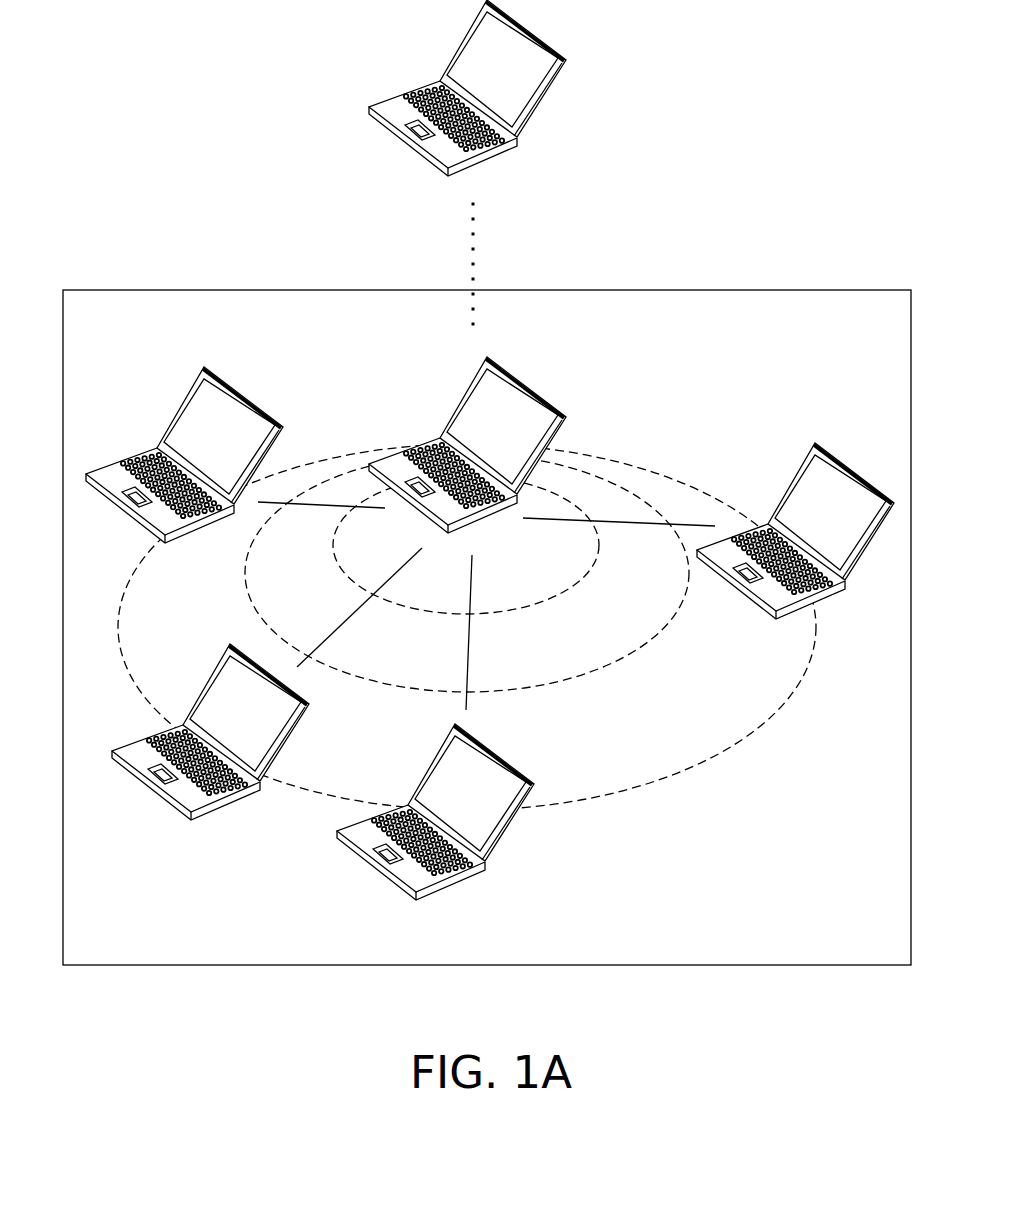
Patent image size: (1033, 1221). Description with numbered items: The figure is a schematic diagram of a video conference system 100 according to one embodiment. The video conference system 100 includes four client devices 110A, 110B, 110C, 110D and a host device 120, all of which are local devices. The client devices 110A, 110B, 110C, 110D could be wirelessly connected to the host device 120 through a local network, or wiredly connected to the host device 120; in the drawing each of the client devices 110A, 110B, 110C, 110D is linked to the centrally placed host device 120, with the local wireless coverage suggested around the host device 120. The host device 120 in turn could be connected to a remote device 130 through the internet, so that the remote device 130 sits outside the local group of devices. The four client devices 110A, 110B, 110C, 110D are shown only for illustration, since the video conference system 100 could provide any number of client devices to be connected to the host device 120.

The video conference system 100 is at (786, 290).
The client device 110A is at (212, 367).
The client device 110B is at (200, 818).
The client device 110C is at (437, 898).
The client device 110D is at (833, 445).
The host device 120 is at (565, 420).
The remote device 130 is at (533, 119).